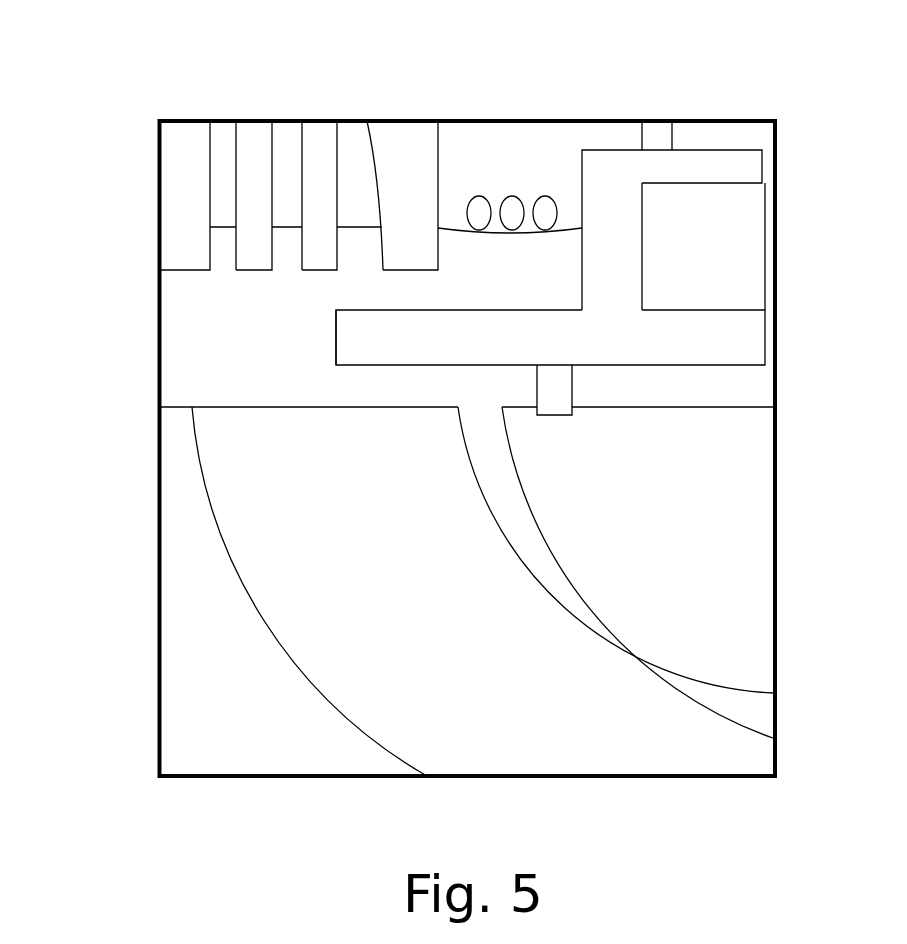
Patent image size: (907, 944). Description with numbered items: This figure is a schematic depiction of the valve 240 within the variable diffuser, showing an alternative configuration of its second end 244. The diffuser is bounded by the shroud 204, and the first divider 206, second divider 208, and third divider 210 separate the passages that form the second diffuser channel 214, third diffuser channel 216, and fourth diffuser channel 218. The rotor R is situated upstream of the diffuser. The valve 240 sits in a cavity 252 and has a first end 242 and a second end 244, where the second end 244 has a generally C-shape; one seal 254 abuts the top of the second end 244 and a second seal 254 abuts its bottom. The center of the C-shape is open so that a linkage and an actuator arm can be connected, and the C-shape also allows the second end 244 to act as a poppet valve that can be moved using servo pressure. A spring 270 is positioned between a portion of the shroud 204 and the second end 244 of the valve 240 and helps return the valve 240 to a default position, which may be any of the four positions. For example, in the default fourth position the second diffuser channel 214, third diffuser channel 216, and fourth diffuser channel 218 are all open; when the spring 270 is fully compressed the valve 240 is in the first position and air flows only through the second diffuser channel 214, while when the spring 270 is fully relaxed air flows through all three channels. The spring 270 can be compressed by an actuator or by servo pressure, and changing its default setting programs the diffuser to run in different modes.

The shroud 204 is at (410, 140).
The first divider 206 is at (178, 146).
The second divider 208 is at (253, 140).
The third divider 210 is at (323, 137).
The second diffuser channel 214 is at (222, 138).
The third diffuser channel 216 is at (287, 137).
The fourth diffuser channel 218 is at (355, 137).
The valve 240 is at (607, 333).
The first end 242 is at (336, 338).
The second end 244 is at (763, 163).
The cavity 252 is at (722, 237).
The seals 254 is at (658, 133).
The spring 270 is at (512, 198).
The rotor R is at (212, 520).